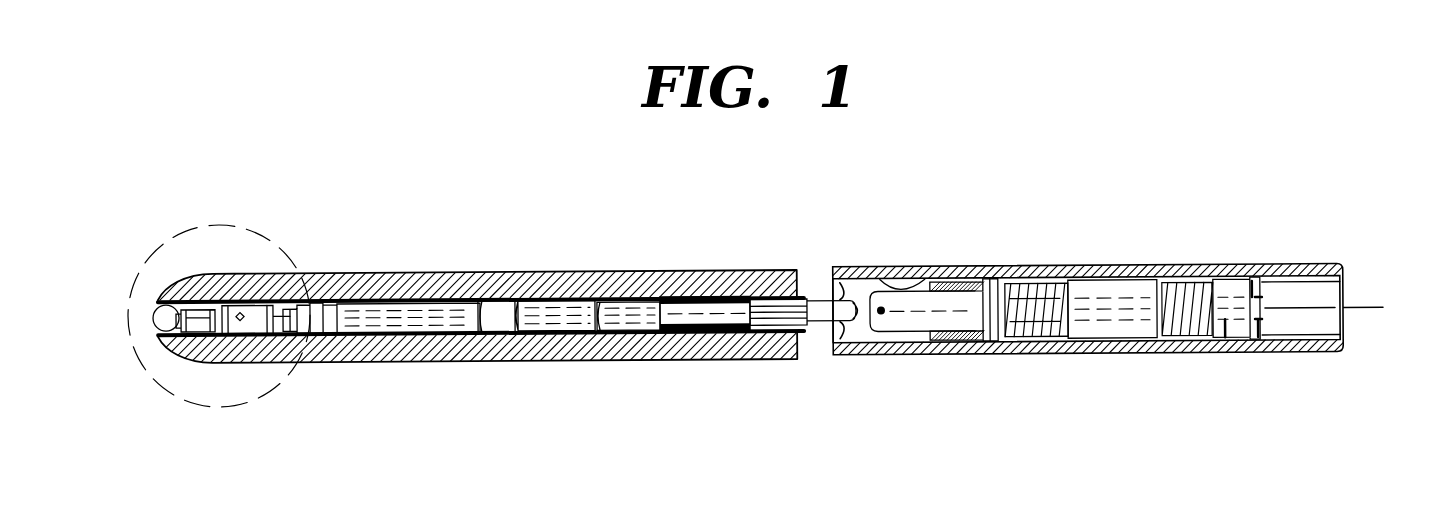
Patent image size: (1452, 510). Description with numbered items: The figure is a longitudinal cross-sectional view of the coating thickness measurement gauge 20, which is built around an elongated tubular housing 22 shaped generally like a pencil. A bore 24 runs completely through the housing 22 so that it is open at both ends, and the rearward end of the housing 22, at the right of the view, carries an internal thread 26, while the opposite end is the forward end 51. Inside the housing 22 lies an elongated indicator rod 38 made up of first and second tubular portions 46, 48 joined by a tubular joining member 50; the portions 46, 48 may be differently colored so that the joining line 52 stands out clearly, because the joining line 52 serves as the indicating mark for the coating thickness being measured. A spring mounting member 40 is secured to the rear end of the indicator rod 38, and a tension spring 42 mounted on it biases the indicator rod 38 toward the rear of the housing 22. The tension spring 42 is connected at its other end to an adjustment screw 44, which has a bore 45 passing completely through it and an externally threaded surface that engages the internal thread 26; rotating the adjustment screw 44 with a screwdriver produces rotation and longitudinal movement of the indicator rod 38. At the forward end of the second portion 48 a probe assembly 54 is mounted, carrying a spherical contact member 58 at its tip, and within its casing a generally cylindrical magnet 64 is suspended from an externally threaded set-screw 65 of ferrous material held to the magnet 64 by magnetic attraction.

The coating thickness measurement gauge 20 is at (600, 270).
The tubular housing 22 is at (727, 307).
The bore 24 is at (915, 285).
The internal thread 26 is at (1313, 260).
The indicator rod 38 is at (832, 278).
The spring mounting member 40 is at (995, 290).
The tension spring 42 is at (1105, 287).
The adjustment screw 44 is at (1238, 288).
The bore 45 is at (1225, 320).
The first tubular portion 46 is at (760, 333).
The second tubular portion 48 is at (640, 335).
The tubular joining member 50 is at (732, 305).
The forward end 51 is at (142, 368).
The joining line 52 is at (703, 333).
The probe assembly 54 is at (247, 293).
The spherical contact member 58 is at (147, 282).
The magnet 64 is at (193, 347).
The set-screw 65 is at (312, 287).